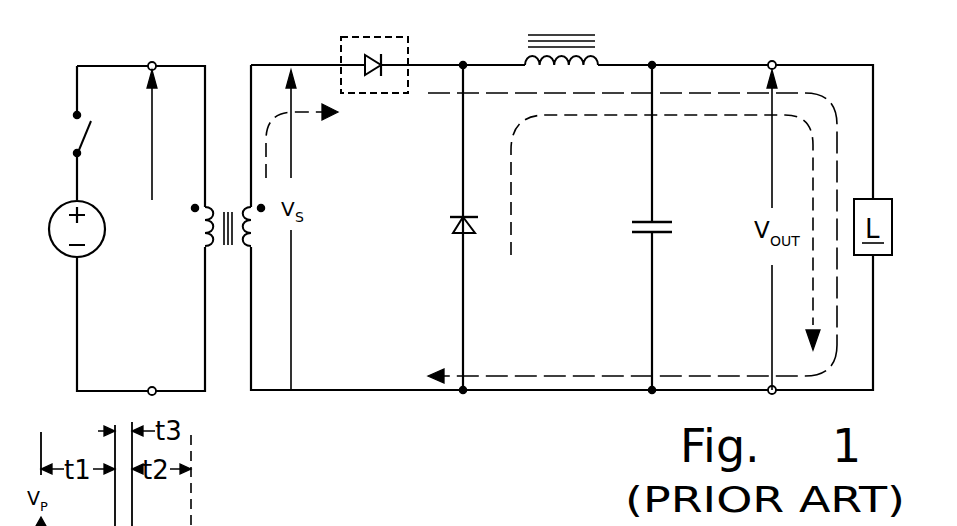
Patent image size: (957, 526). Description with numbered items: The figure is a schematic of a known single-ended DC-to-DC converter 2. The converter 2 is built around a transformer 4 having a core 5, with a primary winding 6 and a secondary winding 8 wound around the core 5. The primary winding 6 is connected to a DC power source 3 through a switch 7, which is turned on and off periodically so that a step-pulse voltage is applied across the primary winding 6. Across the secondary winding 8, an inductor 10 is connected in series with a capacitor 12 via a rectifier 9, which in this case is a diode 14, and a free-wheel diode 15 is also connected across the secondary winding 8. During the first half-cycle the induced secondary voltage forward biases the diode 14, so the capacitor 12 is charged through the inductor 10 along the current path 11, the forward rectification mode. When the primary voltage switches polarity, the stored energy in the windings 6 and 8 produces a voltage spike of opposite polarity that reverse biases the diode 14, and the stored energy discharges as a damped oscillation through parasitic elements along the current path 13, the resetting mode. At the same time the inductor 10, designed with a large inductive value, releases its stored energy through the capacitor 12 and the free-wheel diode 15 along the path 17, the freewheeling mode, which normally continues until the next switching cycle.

The single-ended converter 2 is at (143, 31).
The DC power source 3 is at (50, 232).
The transformer 4 is at (226, 215).
The core 5 is at (229, 250).
The primary winding 6 is at (200, 236).
The switch 7 is at (84, 138).
The secondary winding 8 is at (256, 236).
The rectifier 9 is at (352, 46).
The inductor 10 is at (600, 58).
The current path 11 is at (553, 376).
The capacitor 12 is at (662, 220).
The current path 13 is at (306, 113).
The diode 14 is at (378, 54).
The free-wheel diode 15 is at (450, 228).
The path of freewheeling current 17 is at (515, 192).